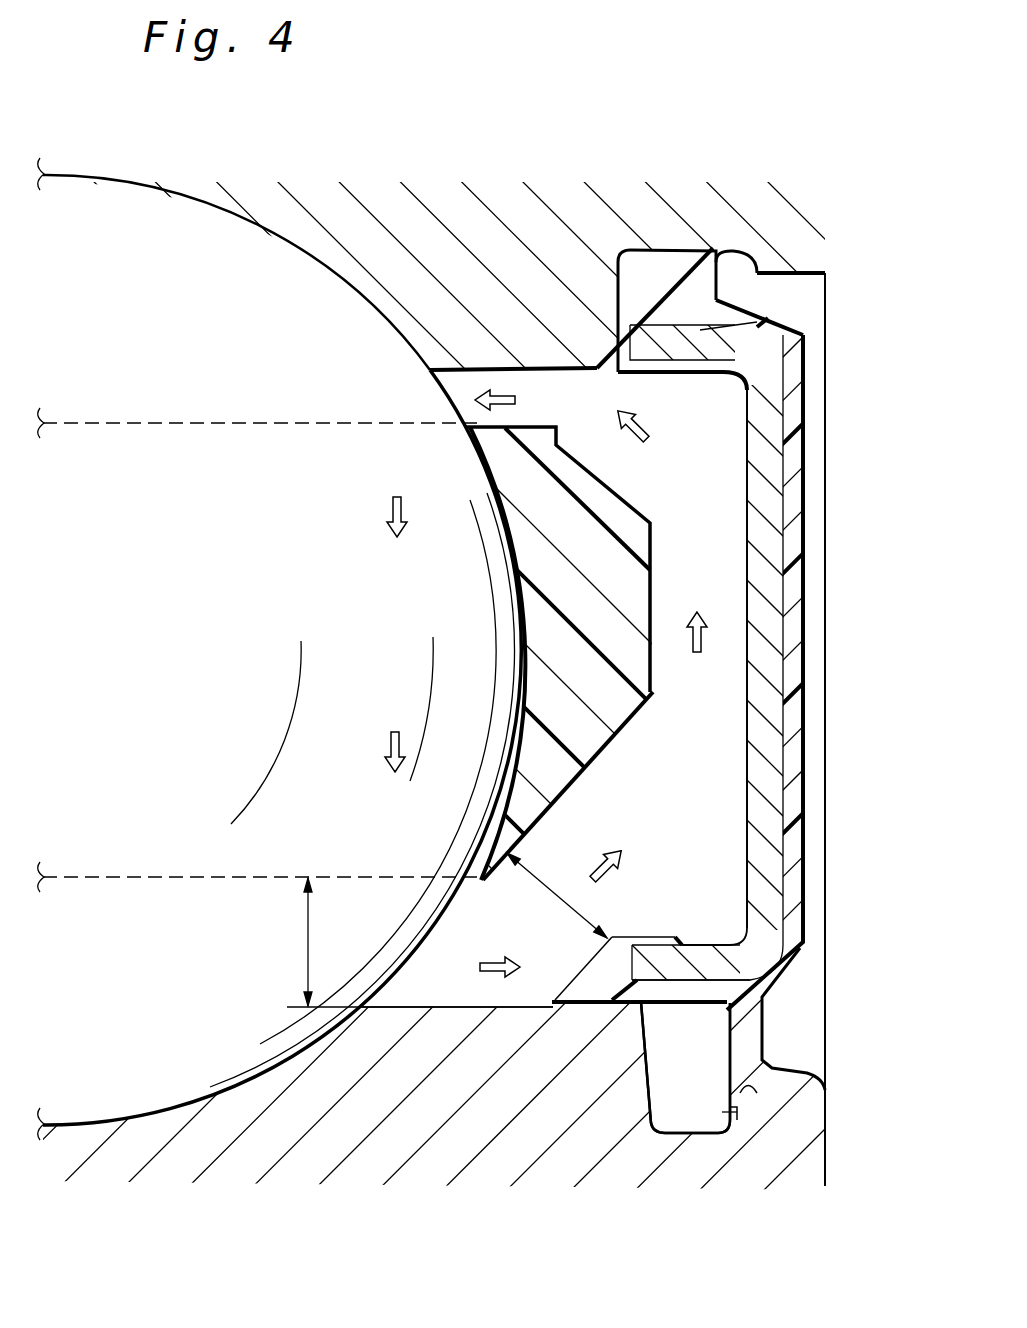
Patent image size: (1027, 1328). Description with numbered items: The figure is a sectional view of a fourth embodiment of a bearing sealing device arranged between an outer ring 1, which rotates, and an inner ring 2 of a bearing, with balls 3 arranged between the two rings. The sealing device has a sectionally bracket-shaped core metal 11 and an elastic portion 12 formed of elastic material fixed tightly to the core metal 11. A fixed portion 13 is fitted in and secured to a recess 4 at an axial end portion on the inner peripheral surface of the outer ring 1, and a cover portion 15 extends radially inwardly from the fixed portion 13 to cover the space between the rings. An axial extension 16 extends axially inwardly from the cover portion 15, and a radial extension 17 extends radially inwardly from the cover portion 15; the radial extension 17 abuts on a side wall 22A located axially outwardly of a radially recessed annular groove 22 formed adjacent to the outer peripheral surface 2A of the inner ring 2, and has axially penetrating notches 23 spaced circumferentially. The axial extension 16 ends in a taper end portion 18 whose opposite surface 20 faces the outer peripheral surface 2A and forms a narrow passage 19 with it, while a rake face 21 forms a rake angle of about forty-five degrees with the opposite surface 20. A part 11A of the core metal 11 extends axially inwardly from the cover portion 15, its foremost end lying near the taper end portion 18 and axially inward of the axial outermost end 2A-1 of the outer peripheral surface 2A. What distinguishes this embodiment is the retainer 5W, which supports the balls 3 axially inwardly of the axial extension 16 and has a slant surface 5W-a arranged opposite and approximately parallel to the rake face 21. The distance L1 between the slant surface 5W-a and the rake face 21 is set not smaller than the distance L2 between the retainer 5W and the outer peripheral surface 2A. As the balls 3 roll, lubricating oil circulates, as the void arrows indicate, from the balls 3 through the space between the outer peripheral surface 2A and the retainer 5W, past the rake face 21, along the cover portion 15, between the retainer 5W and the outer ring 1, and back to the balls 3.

The outer ring 1 is at (500, 214).
The inner ring 2 is at (465, 1109).
The outer peripheral surface of the inner ring 2A is at (448, 1004).
The axial outermost end of the outer peripheral surface 2A-1 is at (640, 1082).
The balls 3 is at (215, 354).
The recess 4 is at (650, 262).
The retainer 5W is at (655, 592).
The slant surface 5W-a is at (603, 745).
The core metal 11 is at (748, 405).
The part of the core metal 11A is at (692, 965).
The elastic portion 12 is at (792, 456).
The fixed portion 13 is at (700, 290).
The cover portion 15 is at (745, 510).
The axial extension 16 is at (658, 935).
The radial extension 17 is at (752, 1016).
The taper end portion 18 is at (600, 982).
The narrow passage 19 is at (565, 1004).
The opposite surface 20 is at (622, 998).
The rake face 21 is at (572, 980).
The annular groove 22 is at (690, 1130).
The side wall 22A is at (738, 1090).
The notches 23 is at (750, 1120).
The distance between the slant surface and the rake face L1 is at (553, 880).
The distance between the retainer and the outer peripheral surface L2 is at (285, 942).